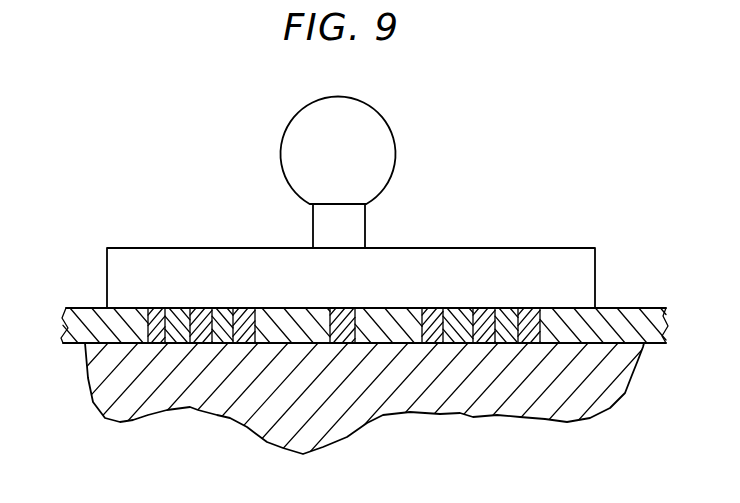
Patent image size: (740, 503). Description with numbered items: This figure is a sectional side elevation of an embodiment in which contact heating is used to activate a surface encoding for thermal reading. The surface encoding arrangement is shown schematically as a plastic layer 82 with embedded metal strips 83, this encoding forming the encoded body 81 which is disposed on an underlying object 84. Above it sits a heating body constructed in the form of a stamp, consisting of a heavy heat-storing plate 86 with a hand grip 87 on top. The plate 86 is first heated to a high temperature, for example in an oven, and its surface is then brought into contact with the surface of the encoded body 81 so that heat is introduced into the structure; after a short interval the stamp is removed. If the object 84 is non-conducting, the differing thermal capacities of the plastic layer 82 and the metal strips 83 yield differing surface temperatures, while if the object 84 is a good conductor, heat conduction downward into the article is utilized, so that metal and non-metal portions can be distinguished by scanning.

The encoded body 81 is at (367, 301).
The plastic layer 82 is at (307, 311).
The embedded strips 83 is at (205, 310).
The object 84 is at (358, 411).
The heat-storing plate 86 is at (563, 250).
The hand grip 87 is at (383, 132).